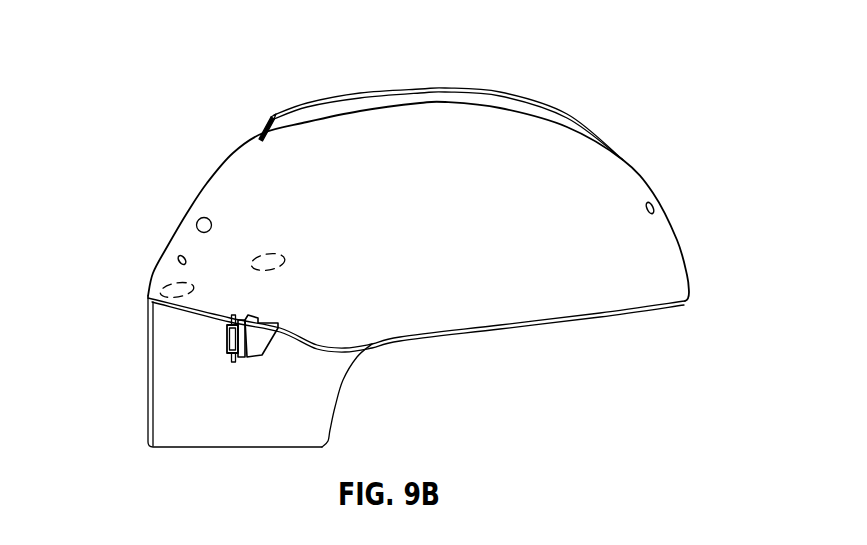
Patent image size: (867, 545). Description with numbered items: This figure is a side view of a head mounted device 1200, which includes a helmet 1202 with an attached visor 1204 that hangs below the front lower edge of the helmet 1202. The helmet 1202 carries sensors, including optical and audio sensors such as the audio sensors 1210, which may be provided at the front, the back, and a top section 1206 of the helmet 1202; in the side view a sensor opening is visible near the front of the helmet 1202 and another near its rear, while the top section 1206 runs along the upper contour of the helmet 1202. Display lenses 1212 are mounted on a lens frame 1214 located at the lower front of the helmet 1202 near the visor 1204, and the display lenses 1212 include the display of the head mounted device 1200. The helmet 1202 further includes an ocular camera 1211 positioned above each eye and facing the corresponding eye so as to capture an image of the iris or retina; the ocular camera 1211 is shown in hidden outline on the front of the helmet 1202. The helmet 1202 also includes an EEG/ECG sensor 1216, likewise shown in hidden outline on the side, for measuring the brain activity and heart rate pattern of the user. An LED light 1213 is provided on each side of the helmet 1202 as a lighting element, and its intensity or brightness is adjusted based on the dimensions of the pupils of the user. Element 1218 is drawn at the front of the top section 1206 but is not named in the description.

The head mounted device 1200 is at (178, 27).
The helmet 1202 is at (573, 320).
The visor 1204 is at (337, 407).
The top section 1206 is at (472, 92).
The audio sensor 1210 is at (178, 259).
The ocular camera 1211 is at (160, 290).
The display lens 1212 is at (226, 338).
The LED light 1213 is at (201, 218).
The lens frame 1214 is at (267, 351).
The EEG/ECG sensor 1216 is at (267, 253).
The strap clip 1218 is at (298, 142).